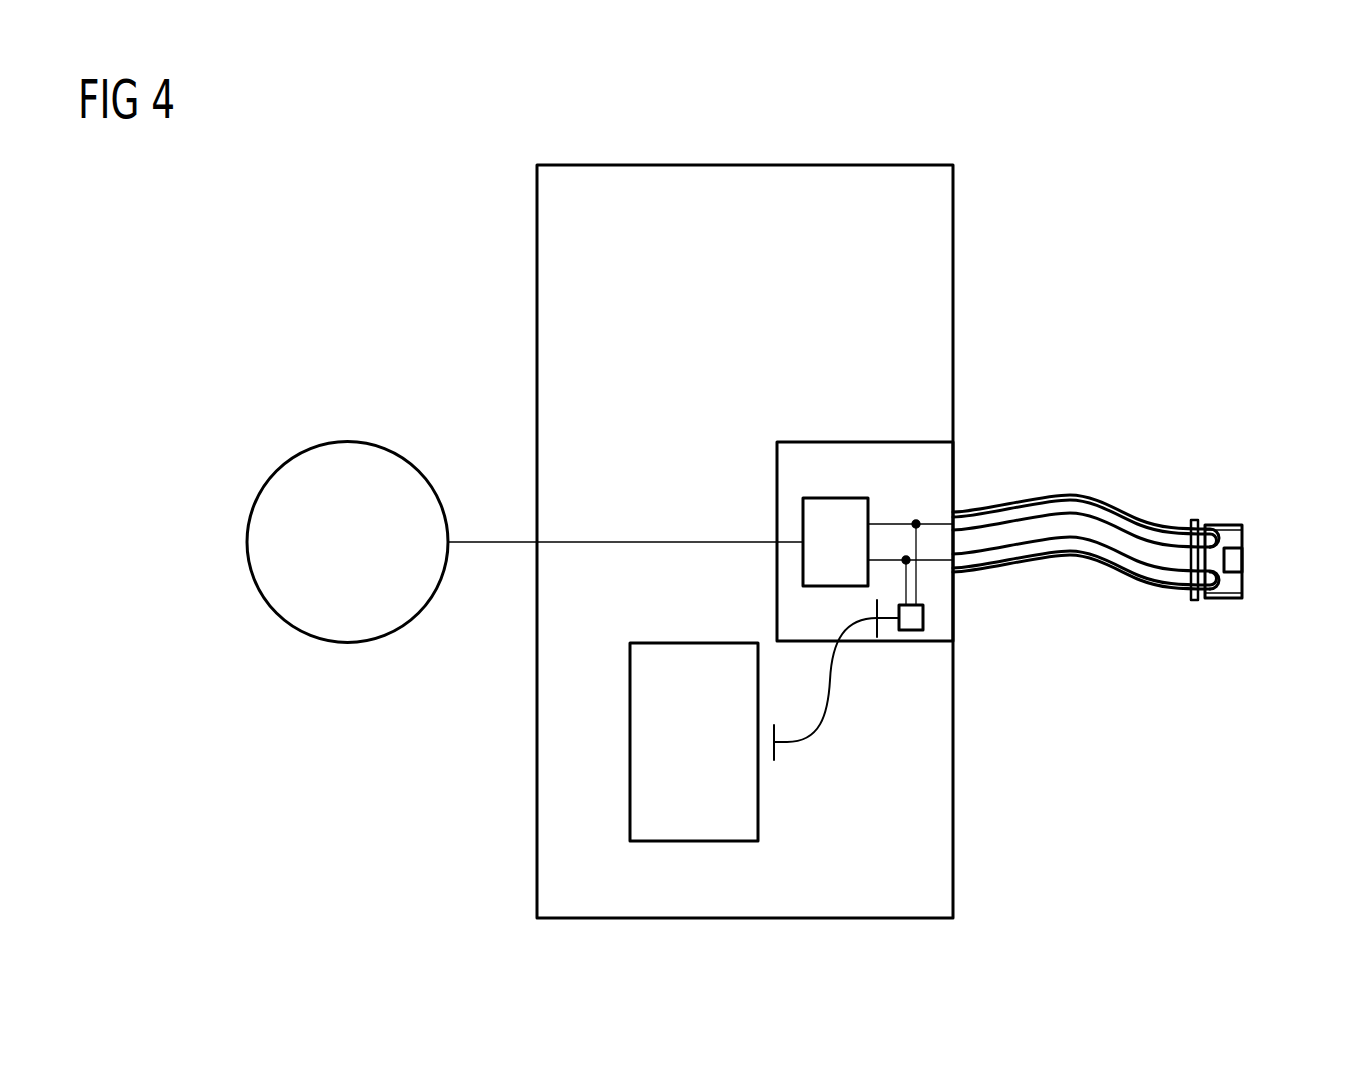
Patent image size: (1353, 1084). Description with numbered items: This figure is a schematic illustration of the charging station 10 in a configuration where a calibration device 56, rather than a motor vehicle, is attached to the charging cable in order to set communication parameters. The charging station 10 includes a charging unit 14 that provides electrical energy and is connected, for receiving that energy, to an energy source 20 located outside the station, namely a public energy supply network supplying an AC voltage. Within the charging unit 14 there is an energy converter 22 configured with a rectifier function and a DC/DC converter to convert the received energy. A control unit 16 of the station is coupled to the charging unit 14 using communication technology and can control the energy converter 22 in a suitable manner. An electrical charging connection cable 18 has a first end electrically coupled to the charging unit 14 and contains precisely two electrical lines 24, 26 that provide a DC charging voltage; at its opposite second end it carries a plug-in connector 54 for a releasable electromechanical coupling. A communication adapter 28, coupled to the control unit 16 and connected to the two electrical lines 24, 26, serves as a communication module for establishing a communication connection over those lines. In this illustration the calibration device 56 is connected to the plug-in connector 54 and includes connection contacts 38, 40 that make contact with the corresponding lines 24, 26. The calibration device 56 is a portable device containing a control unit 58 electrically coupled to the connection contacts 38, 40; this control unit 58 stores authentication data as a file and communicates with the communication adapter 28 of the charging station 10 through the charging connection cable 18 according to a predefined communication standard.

The charging station 10 is at (934, 142).
The charging unit 14 is at (869, 645).
The control unit 16 is at (758, 797).
The charging connection cable 18 is at (1086, 520).
The energy source 20 is at (346, 441).
The energy converter 22 is at (803, 516).
The electrical line 24 is at (1068, 498).
The electrical line 26 is at (1070, 550).
The communication adapter 28 is at (910, 633).
The connection contact 38 is at (1230, 525).
The connection contact 40 is at (1230, 598).
The plug-in connector 54 is at (1192, 598).
The calibration device 56 is at (1228, 531).
The control unit 58 is at (1236, 558).